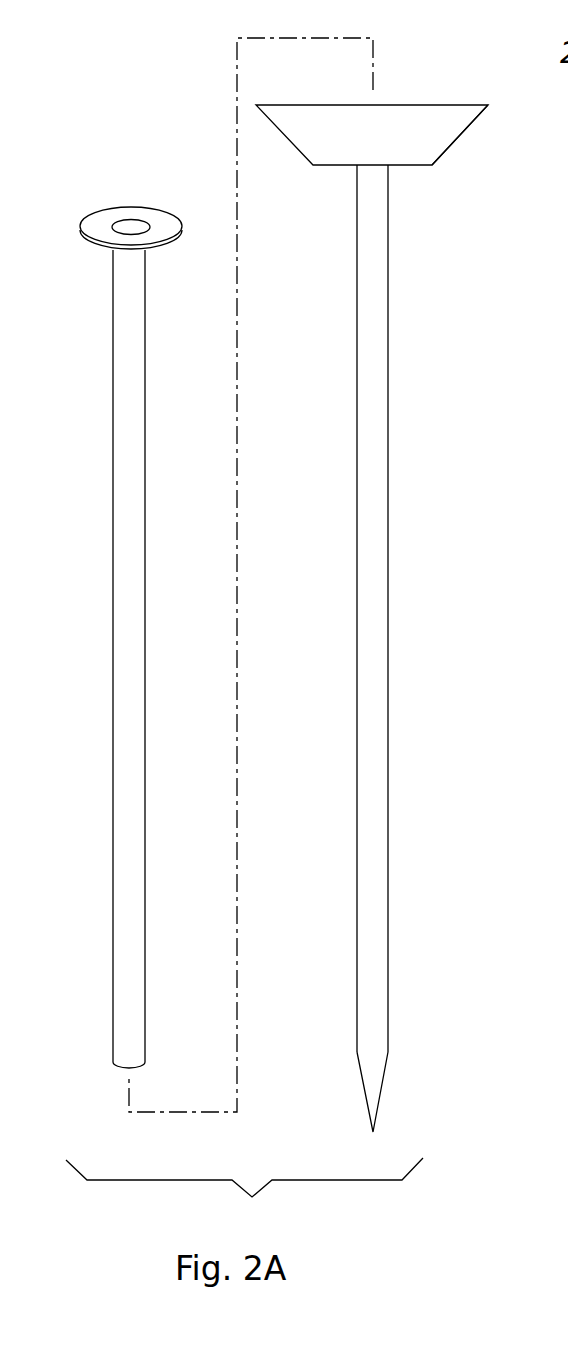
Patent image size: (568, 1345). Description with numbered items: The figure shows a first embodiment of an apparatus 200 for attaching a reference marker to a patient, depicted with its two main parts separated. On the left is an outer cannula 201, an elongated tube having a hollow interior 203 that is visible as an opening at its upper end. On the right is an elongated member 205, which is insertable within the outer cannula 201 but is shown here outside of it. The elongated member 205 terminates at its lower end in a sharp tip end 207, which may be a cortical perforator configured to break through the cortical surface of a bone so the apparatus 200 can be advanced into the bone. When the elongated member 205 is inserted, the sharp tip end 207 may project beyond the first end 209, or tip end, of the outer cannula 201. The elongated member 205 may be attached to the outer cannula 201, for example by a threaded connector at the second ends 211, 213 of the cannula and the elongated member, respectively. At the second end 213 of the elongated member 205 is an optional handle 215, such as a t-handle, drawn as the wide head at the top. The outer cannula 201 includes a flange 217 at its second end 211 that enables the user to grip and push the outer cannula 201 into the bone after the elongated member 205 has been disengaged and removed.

The apparatus 200 is at (163, 76).
The outer cannula 201 is at (122, 547).
The hollow interior 203 is at (129, 216).
The elongated member 205 is at (379, 470).
The sharp tip end 207 is at (357, 1108).
The first end 209 is at (112, 1052).
The second end 211 is at (188, 206).
The second end 213 is at (413, 101).
The handle 215 is at (436, 129).
The flange 217 is at (92, 222).